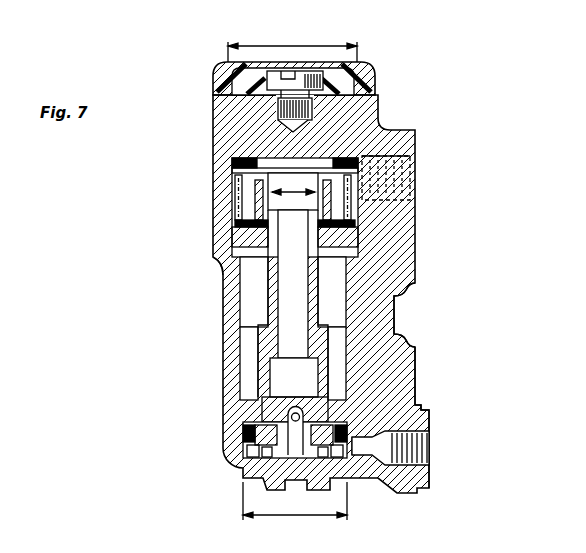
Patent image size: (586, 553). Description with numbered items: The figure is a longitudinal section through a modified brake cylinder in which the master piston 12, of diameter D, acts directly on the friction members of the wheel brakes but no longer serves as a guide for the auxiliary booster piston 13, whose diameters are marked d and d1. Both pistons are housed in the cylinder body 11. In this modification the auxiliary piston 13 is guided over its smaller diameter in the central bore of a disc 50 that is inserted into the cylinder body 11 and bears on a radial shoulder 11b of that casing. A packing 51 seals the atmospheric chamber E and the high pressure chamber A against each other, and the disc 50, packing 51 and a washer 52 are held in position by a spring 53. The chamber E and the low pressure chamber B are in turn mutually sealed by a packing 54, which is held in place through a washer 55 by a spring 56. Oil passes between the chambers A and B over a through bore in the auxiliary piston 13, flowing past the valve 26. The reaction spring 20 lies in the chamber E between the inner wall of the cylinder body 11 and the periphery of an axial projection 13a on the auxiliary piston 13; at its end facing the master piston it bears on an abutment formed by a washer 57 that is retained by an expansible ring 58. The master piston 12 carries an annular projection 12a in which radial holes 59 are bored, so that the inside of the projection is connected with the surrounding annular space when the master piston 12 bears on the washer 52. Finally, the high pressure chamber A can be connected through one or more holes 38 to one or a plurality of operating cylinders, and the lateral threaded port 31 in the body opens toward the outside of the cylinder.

The cylinder body 11 is at (215, 129).
The radial shoulder 11b is at (220, 264).
The master piston 12 is at (366, 118).
The annular projection 12a is at (243, 173).
The auxiliary booster piston 13 is at (262, 408).
The axial projection 13a is at (270, 300).
The reaction spring 20 is at (408, 382).
The valve 26 is at (272, 378).
The threaded port 31 is at (430, 447).
The holes 38 is at (400, 174).
The disc 50 is at (340, 224).
The packing 51 is at (245, 225).
The washer 52 is at (345, 240).
The spring 53 is at (242, 164).
The packing 54 is at (244, 432).
The washer 55 is at (238, 452).
The spring 56 is at (352, 470).
The washer 57 is at (240, 268).
The expansible ring 58 is at (346, 262).
The radial holes 59 is at (270, 128).
The second or high pressure chamber A is at (385, 160).
The first or low pressure chamber B is at (348, 448).
The chamber E is at (398, 318).
The diameter of master piston D is at (292, 44).
The diameter d is at (293, 183).
The diameter of auxiliary piston d1 is at (295, 501).